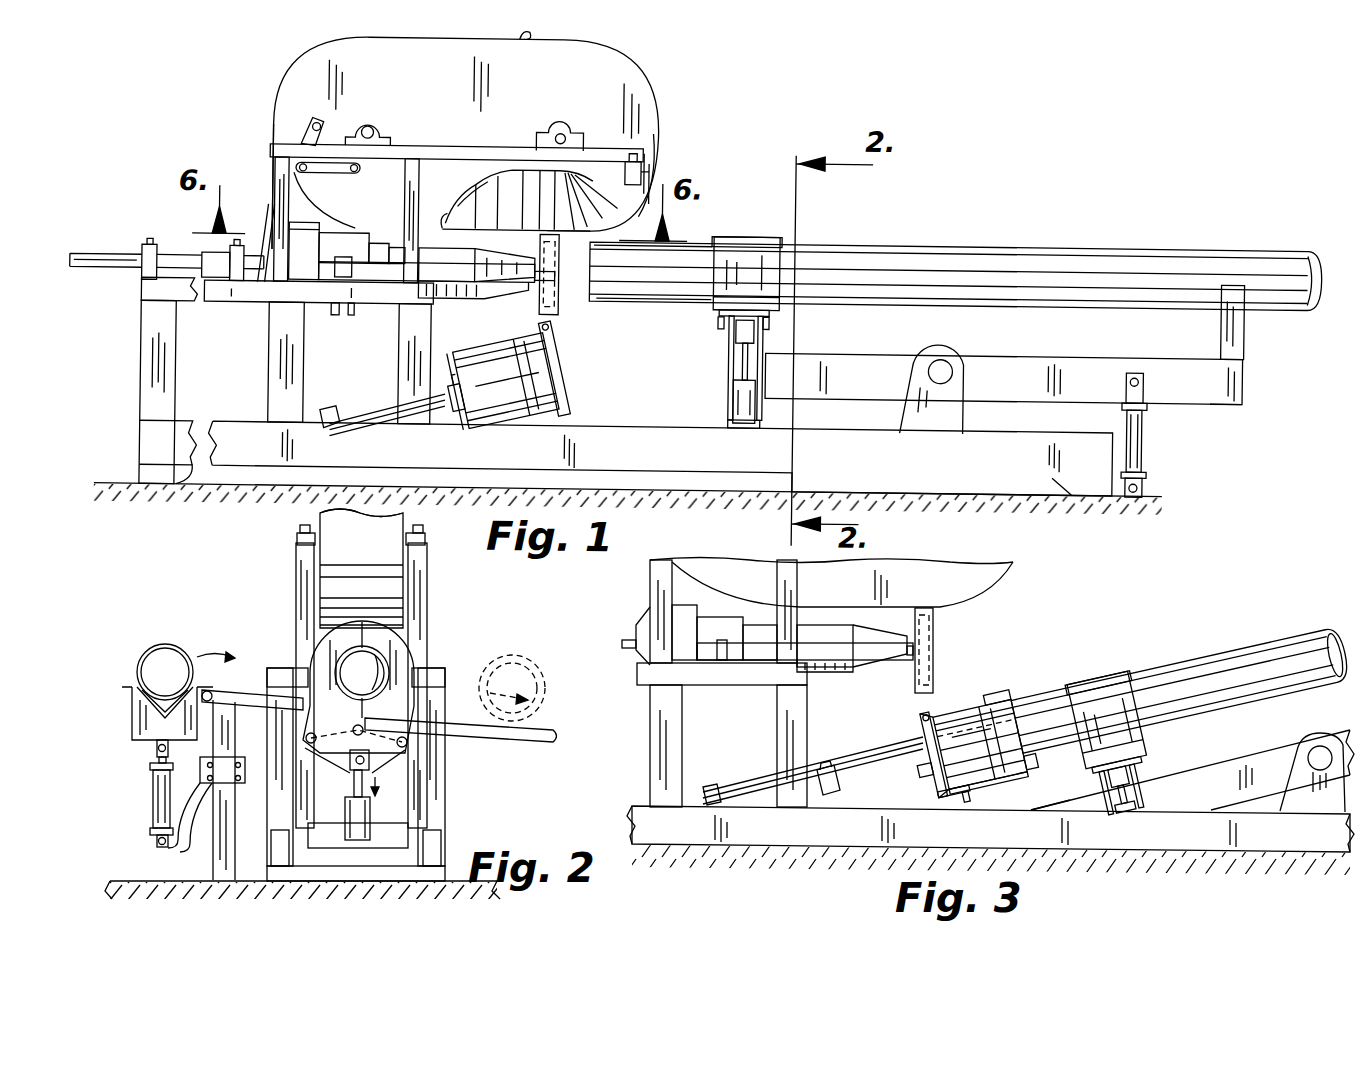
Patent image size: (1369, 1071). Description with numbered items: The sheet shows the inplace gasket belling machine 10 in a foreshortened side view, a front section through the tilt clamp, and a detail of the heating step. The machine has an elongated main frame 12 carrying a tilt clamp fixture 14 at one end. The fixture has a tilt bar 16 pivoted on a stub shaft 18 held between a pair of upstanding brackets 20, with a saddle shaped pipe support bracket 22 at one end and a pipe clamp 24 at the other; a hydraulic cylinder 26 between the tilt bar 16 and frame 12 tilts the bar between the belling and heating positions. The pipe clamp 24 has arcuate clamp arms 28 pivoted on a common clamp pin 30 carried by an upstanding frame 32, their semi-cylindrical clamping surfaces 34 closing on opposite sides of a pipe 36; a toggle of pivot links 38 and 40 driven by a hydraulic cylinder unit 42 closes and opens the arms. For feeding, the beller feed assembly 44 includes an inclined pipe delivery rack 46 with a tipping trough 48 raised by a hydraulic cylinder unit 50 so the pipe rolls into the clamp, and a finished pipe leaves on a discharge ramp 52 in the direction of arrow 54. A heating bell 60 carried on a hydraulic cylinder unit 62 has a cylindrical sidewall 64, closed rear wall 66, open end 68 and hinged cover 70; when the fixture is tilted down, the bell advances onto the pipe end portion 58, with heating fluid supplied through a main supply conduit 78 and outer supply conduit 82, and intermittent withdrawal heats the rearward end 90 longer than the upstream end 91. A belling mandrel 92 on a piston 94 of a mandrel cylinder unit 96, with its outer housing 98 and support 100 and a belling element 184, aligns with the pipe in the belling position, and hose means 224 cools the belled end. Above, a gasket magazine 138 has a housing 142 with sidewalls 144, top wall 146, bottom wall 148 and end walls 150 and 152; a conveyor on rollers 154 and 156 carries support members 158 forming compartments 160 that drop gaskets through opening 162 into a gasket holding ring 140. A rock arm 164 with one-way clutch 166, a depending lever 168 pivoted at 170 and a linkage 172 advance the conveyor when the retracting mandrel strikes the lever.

In FIG. 1, the inplace gasket belling machine 10 is at (178, 102).
In FIG. 2, the inplace gasket belling machine 10 is at (216, 590).
In FIG. 1, the main frame 12 is at (157, 436).
In FIG. 2, the main frame 12 is at (268, 858).
In FIG. 3, the main frame 12 is at (1175, 838).
In FIG. 1, the tilt clamp fixture 14 is at (1208, 395).
In FIG. 3, the tilt clamp fixture 14 is at (1300, 741).
In FIG. 1, the tilt bar 16 is at (1023, 358).
In FIG. 3, the tilt bar 16 is at (1215, 780).
In FIG. 1, the stub shaft 18 is at (946, 360).
In FIG. 3, the stub shaft 18 is at (1322, 749).
In FIG. 1, the upstanding brackets 20 is at (952, 411).
In FIG. 3, the upstanding brackets 20 is at (1327, 809).
In FIG. 1, the pipe support bracket 22 is at (1233, 324).
In FIG. 1, the pipe clamp 24 is at (744, 231).
In FIG. 3, the pipe clamp 24 is at (1096, 676).
In FIG. 1, the hydraulic cylinder 26 is at (1143, 438).
In FIG. 1, the clamp arms 28 is at (781, 236).
In FIG. 2, the clamp arms 28 is at (324, 652).
In FIG. 3, the clamp arms 28 is at (1125, 677).
In FIG. 2, the clamp pin 30 is at (419, 735).
In FIG. 1, the upstanding frame 32 is at (768, 345).
In FIG. 2, the upstanding frame 32 is at (404, 797).
In FIG. 2, the clamping surfaces 34 is at (383, 668).
In FIG. 1, the pipe 36 is at (927, 248).
In FIG. 2, the pipe 36 is at (368, 652).
In FIG. 3, the pipe 36 is at (1243, 658).
In FIG. 2, the pivot link 38 is at (323, 758).
In FIG. 2, the pivot link 40 is at (418, 748).
In FIG. 1, the hydraulic cylinder unit 42 is at (740, 391).
In FIG. 2, the hydraulic cylinder unit 42 is at (371, 815).
In FIG. 3, the hydraulic cylinder unit 42 is at (1127, 786).
In FIG. 2, the pipe loading assembly 44 is at (124, 721).
In FIG. 2, the pipe delivery rack 46 is at (249, 690).
In FIG. 2, the tipping trough 48 is at (147, 727).
In FIG. 2, the hydraulic cylinder unit 50 is at (152, 803).
In FIG. 2, the discharge ramp 52 is at (554, 728).
In FIG. 2, the arrow 54 is at (518, 690).
In FIG. 1, the pipe end portion 58 is at (640, 290).
In FIG. 3, the pipe end portion 58 is at (1008, 690).
In FIG. 1, the heating bell 60 is at (568, 406).
In FIG. 3, the heating bell 60 is at (906, 734).
In FIG. 1, the hydraulic cylinder unit 62 is at (380, 403).
In FIG. 3, the hydraulic cylinder unit 62 is at (744, 788).
In FIG. 1, the cylindrical sidewall 64 is at (490, 355).
In FIG. 3, the cylindrical sidewall 64 is at (978, 703).
In FIG. 1, the closed rear wall 66 is at (448, 382).
In FIG. 3, the closed rear wall 66 is at (912, 772).
In FIG. 1, the open end 68 is at (548, 350).
In FIG. 3, the open end 68 is at (1020, 692).
In FIG. 1, the hinged cover 70 is at (565, 382).
In FIG. 3, the hinged cover 70 is at (957, 703).
In FIG. 3, the main supply conduit 78 is at (925, 783).
In FIG. 3, the outer supply conduit 82 is at (982, 778).
In FIG. 3, the rearward end of the pipe 90 is at (917, 742).
In FIG. 3, the upstream end 91 is at (1034, 767).
In FIG. 1, the belling mandrel 92 is at (257, 238).
In FIG. 3, the belling mandrel 92 is at (764, 618).
In FIG. 1, the piston 94 is at (236, 282).
In FIG. 3, the piston 94 is at (630, 640).
In FIG. 1, the mandrel cylinder unit 96 is at (173, 250).
In FIG. 1, the outer housing 98 is at (347, 233).
In FIG. 3, the outer housing 98 is at (718, 617).
In FIG. 1, the platform 100 is at (293, 284).
In FIG. 1, the gasket magazine 138 is at (672, 89).
In FIG. 1, the gasket holding ring 140 is at (558, 235).
In FIG. 3, the gasket holding ring 140 is at (934, 621).
In FIG. 1, the housing 142 is at (657, 115).
In FIG. 3, the housing 142 is at (1004, 579).
In FIG. 1, the sidewalls 144 is at (600, 70).
In FIG. 2, the sidewalls 144 is at (404, 517).
In FIG. 1, the top wall 146 is at (516, 36).
In FIG. 1, the bottom wall 148 is at (441, 229).
In FIG. 1, the end wall 150 is at (655, 143).
In FIG. 2, the end wall 150 is at (380, 560).
In FIG. 1, the end wall 152 is at (268, 126).
In FIG. 1, the transverse roller 154 is at (562, 130).
In FIG. 2, the transverse roller 154 is at (420, 530).
In FIG. 1, the transverse roller 156 is at (372, 124).
In FIG. 1, the support members 158 is at (483, 180).
In FIG. 1, the gasket-receiving compartments 160 is at (506, 185).
In FIG. 1, the opening 162 is at (547, 230).
In FIG. 1, the rock arm 164 is at (387, 143).
In FIG. 1, the one-way clutch 166 is at (381, 129).
In FIG. 1, the depending lever 168 is at (292, 178).
In FIG. 1, the pivotal connection 170 is at (311, 118).
In FIG. 1, the linkage 172 is at (340, 172).
In FIG. 1, the cutter 184 is at (483, 290).
In FIG. 1, the hose means 224 is at (640, 165).